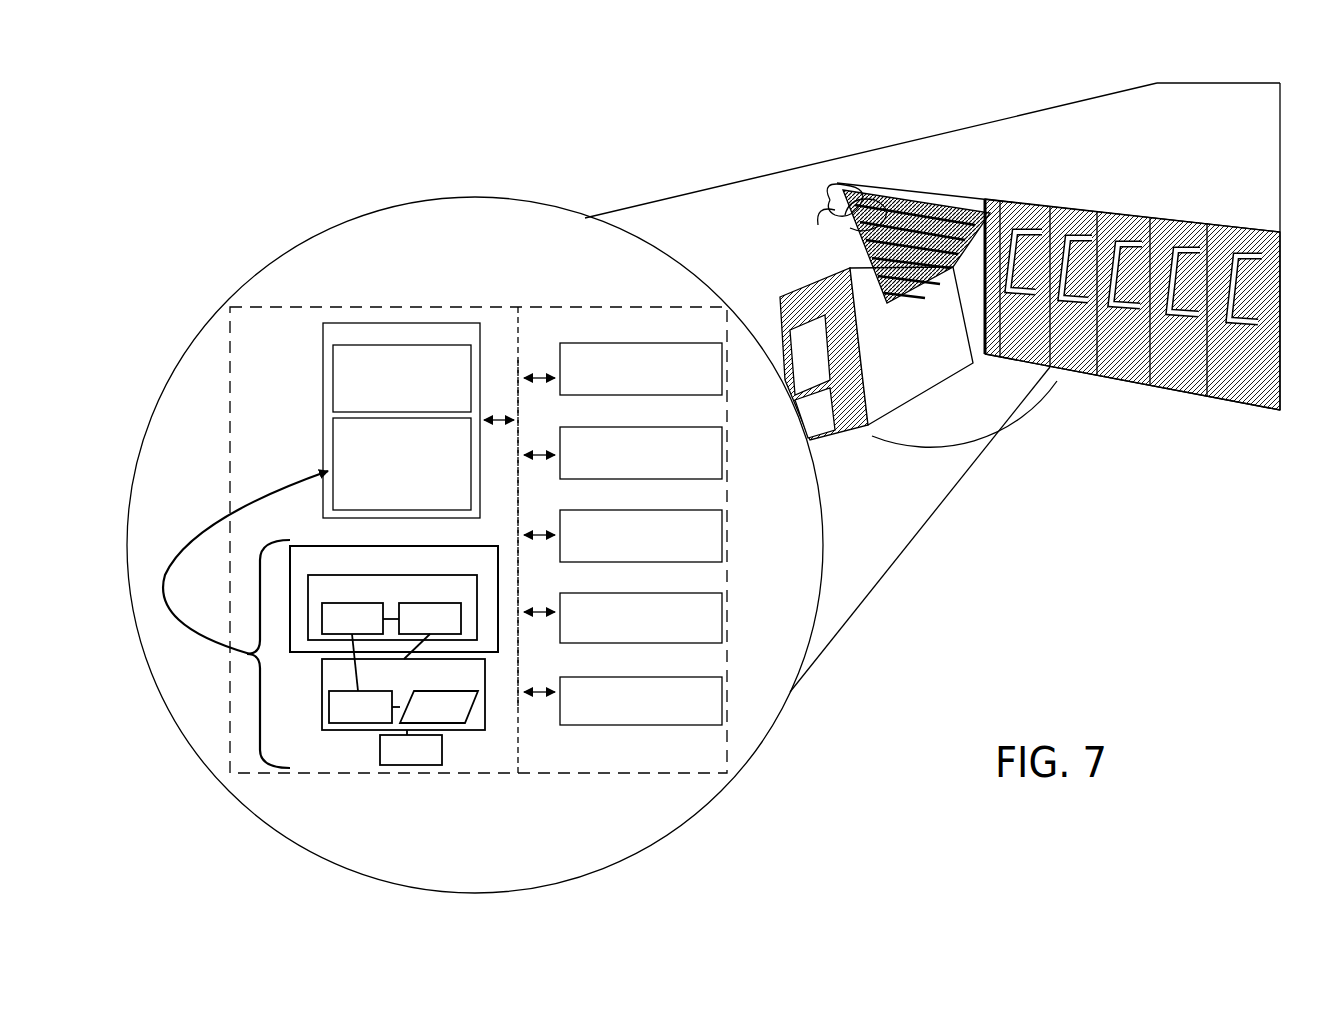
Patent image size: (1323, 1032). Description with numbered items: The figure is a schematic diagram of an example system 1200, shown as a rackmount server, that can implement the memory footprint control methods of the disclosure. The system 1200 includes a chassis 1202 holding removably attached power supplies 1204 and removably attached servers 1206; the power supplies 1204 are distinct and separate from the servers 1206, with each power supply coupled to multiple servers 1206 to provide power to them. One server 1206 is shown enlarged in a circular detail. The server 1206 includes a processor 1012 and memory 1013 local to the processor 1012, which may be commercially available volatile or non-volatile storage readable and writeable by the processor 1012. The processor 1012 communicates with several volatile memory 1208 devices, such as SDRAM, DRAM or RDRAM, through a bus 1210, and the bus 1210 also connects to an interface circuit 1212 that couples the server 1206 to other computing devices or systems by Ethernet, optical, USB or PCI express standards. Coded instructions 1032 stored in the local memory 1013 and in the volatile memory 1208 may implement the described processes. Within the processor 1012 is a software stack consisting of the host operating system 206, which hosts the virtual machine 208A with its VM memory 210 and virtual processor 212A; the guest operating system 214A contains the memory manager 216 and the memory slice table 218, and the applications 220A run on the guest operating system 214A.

The system 1200 is at (912, 142).
The chassis 1202 is at (1157, 83).
The power supplies 1204 is at (838, 192).
The servers 1206 is at (826, 250).
The volatile memory 1208 is at (953, 272).
The coded instructions 1032 is at (333, 407).
The processor 1012 is at (403, 518).
The memory 1013 is at (402, 378).
The bus 1210 is at (521, 740).
The interface circuit 1212 is at (610, 725).
The host operating system 206 is at (394, 599).
The virtual machine 208A is at (392, 607).
The VM memory 210 is at (352, 618).
The virtual processor 212A is at (430, 618).
The guest operating system 214A is at (403, 694).
The memory manager 216 is at (360, 707).
The memory slice table 218 is at (439, 707).
The applications 220A is at (411, 750).